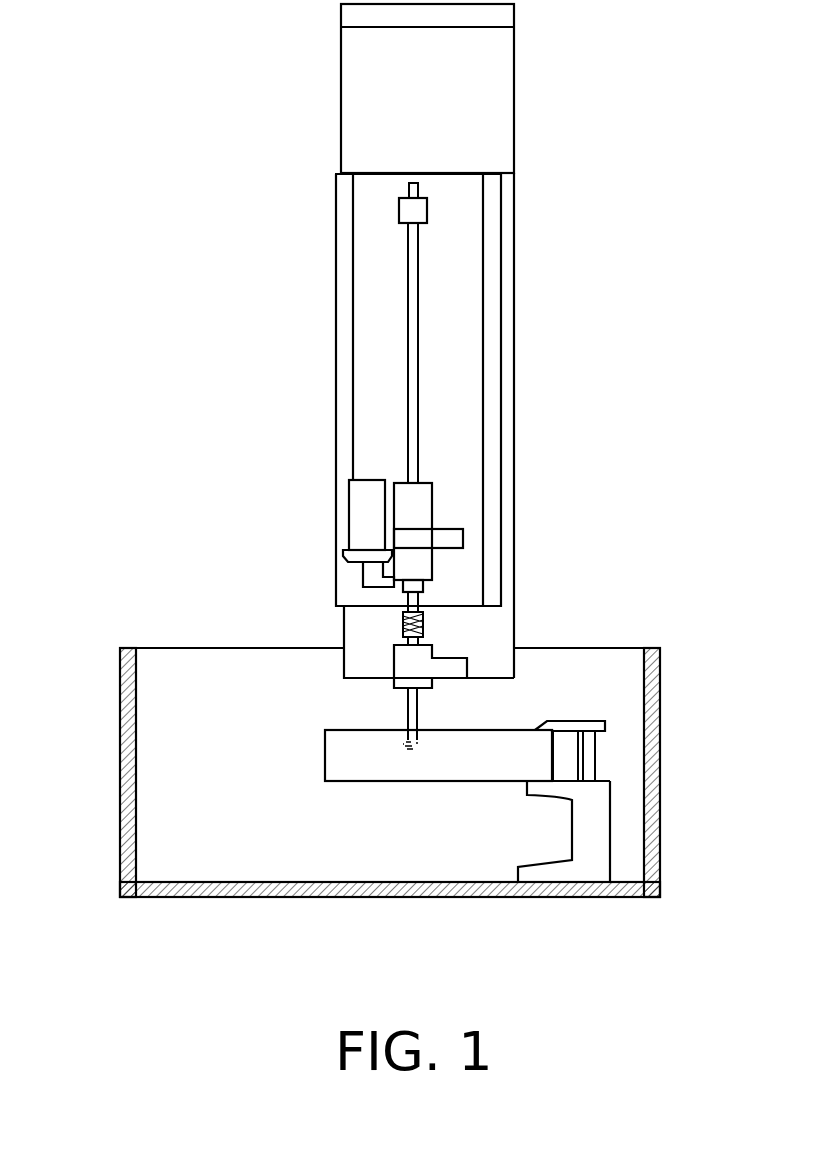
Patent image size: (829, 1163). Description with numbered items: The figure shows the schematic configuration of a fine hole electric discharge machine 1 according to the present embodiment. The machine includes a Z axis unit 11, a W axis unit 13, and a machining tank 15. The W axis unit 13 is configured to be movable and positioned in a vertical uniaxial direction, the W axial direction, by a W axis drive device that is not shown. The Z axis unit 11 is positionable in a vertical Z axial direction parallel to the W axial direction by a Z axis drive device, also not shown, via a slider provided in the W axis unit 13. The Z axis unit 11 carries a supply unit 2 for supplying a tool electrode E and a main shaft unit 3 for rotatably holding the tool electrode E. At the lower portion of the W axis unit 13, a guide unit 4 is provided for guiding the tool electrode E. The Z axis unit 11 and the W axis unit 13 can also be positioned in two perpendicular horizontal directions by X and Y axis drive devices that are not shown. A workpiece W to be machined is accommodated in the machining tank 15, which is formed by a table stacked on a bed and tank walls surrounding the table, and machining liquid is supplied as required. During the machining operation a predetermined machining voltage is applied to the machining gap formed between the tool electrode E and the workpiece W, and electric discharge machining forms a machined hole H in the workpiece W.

The fine hole electric discharge machine 1 is at (110, 119).
The W axis unit 13 is at (501, 79).
The Z axis unit 11 is at (467, 227).
The supply unit 2 is at (385, 322).
The main shaft unit 3 is at (320, 519).
The guide unit 4 is at (447, 636).
The tool electrode E is at (408, 705).
The machined hole H is at (405, 745).
The machining tank 15 is at (215, 688).
The workpiece W is at (502, 728).